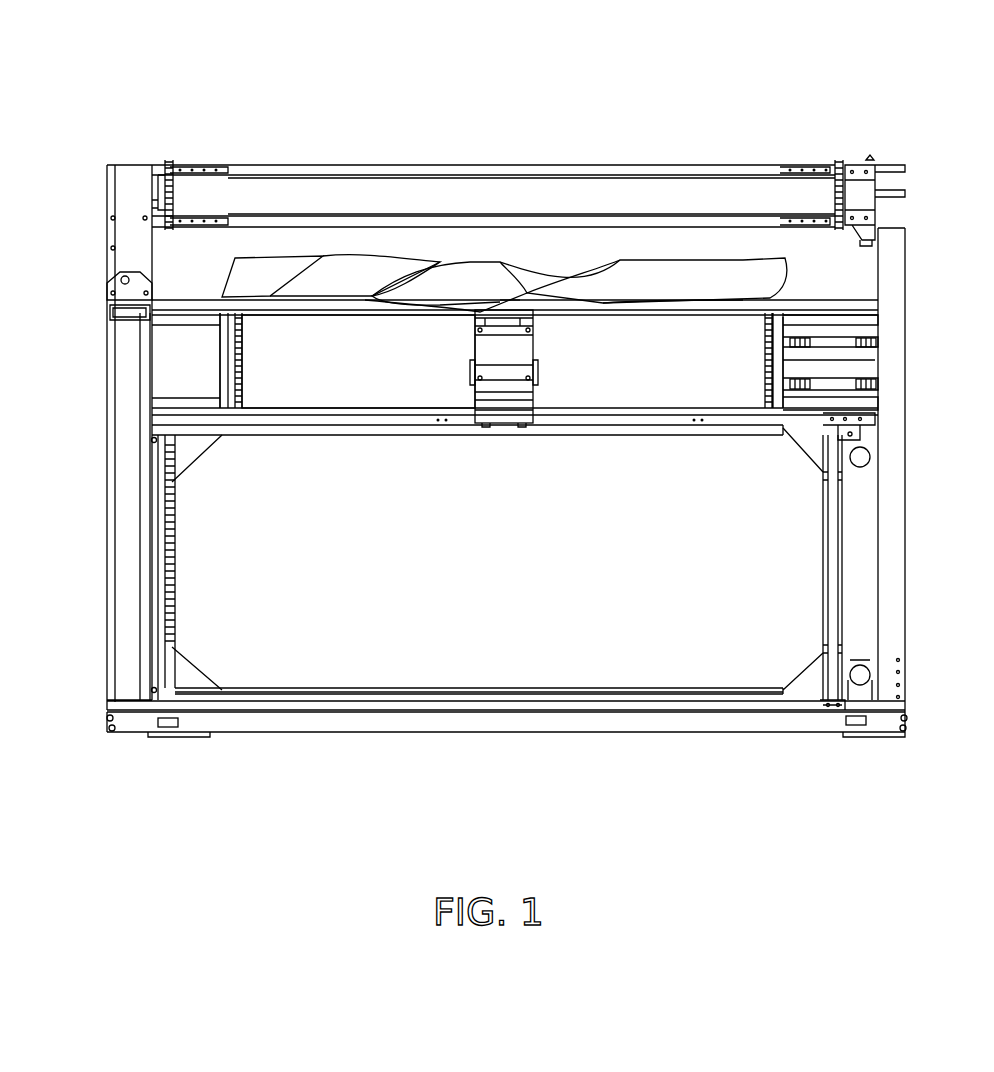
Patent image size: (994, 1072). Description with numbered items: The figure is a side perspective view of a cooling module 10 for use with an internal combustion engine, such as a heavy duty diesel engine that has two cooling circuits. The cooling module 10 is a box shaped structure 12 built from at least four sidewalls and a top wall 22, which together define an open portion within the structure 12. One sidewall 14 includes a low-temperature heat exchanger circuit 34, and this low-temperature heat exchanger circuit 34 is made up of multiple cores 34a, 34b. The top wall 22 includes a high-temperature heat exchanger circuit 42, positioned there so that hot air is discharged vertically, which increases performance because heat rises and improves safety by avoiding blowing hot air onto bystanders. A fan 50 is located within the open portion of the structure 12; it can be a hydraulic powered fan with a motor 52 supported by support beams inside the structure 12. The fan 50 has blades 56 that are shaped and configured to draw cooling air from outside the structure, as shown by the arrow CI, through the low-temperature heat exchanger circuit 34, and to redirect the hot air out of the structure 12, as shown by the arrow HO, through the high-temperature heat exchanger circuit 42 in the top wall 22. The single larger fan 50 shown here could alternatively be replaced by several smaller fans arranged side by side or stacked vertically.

The cooling module 10 is at (160, 80).
The box shaped structure 12 is at (95, 752).
The sidewall 14 is at (258, 378).
The top wall 22 is at (727, 180).
The high-temperature heat exchanger circuit 42 is at (400, 196).
The fan 50 is at (205, 272).
The blades 56 is at (752, 268).
The motor 52 is at (518, 358).
The low-temperature heat exchanger circuit 34 is at (652, 640).
The core 34a is at (243, 535).
The core 34b is at (346, 375).
The cooling air inlet arrow CI is at (336, 640).
The hot air outlet arrow HO is at (510, 140).